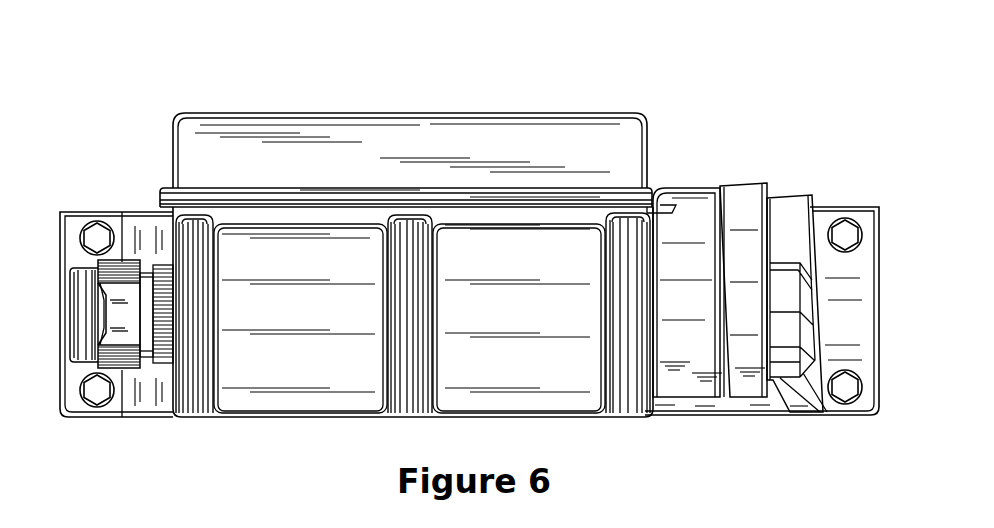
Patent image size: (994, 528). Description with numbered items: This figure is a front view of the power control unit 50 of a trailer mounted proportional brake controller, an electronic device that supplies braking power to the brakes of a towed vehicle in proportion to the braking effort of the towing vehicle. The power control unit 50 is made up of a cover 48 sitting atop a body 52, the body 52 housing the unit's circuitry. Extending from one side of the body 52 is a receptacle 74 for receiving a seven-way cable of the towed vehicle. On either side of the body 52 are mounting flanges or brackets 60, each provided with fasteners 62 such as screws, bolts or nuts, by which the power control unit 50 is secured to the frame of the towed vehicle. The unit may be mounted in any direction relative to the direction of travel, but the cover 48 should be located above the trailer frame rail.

The cover 48 is at (527, 147).
The power control unit 50 is at (290, 103).
The body 52 is at (533, 375).
The mounting bracket 60 is at (150, 393).
The fasteners 62 is at (97, 237).
The receptacle 74 is at (782, 290).